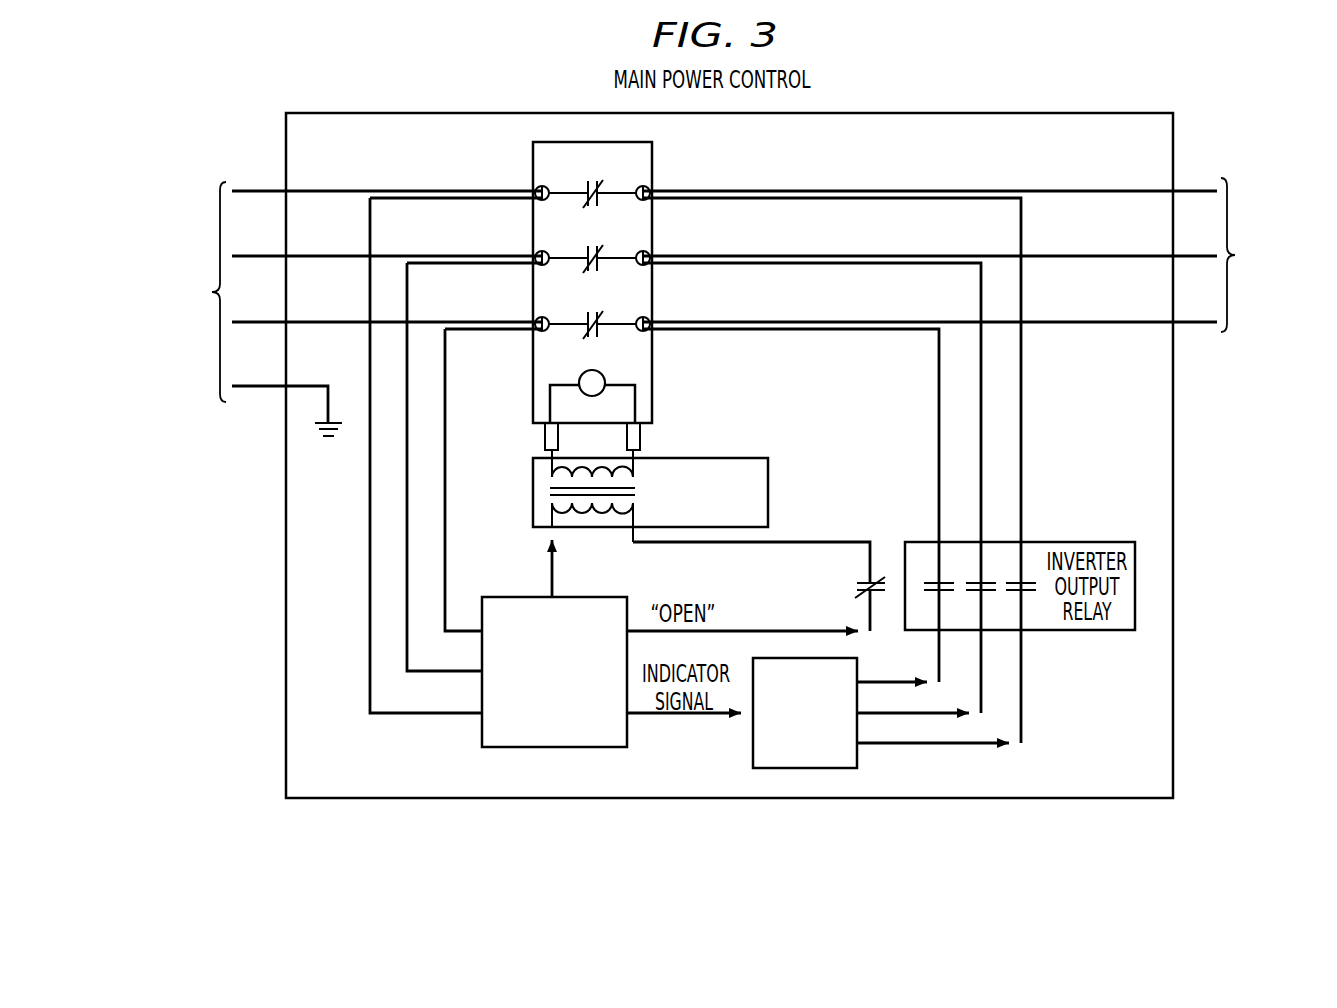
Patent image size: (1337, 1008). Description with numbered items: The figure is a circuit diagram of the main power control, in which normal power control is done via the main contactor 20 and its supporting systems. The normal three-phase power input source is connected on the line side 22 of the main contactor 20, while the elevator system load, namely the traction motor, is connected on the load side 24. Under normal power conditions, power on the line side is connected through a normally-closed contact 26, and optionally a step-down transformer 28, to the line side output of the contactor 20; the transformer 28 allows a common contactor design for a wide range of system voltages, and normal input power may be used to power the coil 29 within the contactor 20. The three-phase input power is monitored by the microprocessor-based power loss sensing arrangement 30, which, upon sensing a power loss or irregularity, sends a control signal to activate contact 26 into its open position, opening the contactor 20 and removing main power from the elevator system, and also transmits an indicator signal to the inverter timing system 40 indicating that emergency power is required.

The main contactor 20 is at (652, 161).
The line side 22 is at (323, 191).
The load side 24 is at (1098, 191).
The normally-closed contact 26 is at (855, 586).
The step-down transformer 28 is at (723, 458).
The coil 29 is at (603, 377).
The power loss sensing arrangement 30 is at (577, 597).
The inverter timing system 40 is at (753, 742).